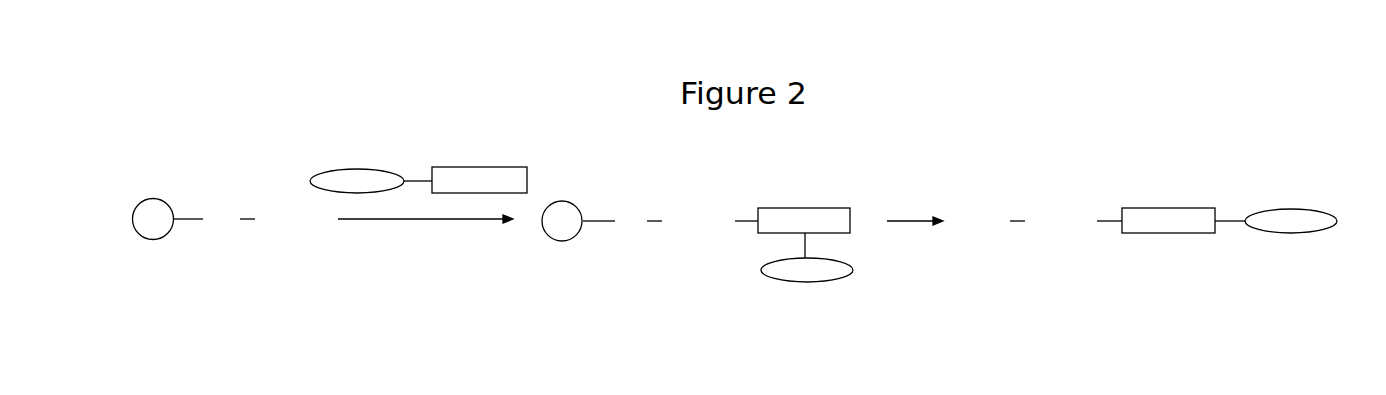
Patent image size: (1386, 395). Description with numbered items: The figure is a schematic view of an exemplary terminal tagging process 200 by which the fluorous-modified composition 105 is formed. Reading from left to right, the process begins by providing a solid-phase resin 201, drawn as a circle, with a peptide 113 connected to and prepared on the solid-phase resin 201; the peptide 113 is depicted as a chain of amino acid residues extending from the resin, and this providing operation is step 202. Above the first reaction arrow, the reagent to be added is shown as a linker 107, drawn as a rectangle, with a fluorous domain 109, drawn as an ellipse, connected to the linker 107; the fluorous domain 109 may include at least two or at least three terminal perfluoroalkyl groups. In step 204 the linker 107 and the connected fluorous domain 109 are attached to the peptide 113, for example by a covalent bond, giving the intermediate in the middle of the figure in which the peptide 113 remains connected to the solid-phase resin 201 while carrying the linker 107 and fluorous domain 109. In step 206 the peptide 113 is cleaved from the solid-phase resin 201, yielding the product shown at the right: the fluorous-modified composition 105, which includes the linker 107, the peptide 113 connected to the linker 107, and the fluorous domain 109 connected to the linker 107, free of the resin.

The terminal tagging process 200 is at (1002, 94).
The solid-phase resin 201 is at (172, 233).
The step of providing a solid-phase resin with a peptide 202 is at (321, 70).
The step of attaching the linker and fluorous domain to the peptide 204 is at (452, 266).
The step of cleaving the peptide from the solid-phase resin 206 is at (973, 251).
The fluorous-modified composition 105 is at (1191, 262).
The linker 107 is at (453, 167).
The fluorous domain 109 is at (342, 168).
The peptide 113 is at (276, 164).